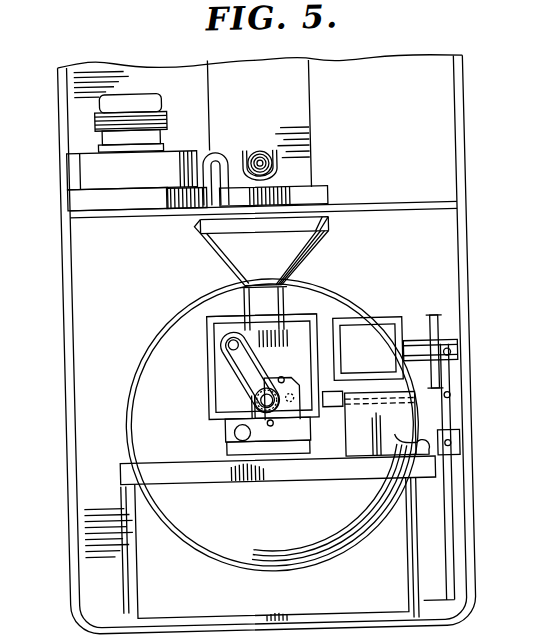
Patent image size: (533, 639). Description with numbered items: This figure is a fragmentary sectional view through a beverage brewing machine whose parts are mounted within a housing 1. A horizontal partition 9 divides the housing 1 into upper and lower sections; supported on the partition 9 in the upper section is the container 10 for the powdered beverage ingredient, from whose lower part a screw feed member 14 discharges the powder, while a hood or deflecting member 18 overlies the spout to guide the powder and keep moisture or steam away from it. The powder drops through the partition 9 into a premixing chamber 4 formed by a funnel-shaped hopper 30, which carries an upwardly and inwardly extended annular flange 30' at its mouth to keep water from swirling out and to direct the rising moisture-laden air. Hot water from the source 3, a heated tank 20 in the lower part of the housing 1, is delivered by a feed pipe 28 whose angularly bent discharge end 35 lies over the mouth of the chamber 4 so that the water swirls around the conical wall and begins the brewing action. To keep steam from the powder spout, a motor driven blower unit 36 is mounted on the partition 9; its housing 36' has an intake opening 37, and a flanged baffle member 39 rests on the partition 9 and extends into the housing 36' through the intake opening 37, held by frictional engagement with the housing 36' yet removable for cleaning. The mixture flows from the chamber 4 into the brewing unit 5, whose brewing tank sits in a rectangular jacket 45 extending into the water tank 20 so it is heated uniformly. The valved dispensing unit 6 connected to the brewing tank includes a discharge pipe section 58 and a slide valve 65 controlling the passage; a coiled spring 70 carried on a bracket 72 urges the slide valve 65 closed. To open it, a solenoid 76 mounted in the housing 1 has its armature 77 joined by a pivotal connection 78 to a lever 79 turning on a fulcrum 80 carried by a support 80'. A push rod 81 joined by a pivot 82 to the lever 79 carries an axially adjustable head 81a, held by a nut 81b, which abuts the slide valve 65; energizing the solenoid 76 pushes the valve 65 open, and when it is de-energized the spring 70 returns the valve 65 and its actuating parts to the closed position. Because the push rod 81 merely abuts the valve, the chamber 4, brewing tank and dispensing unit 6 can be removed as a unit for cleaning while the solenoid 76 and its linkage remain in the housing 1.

The housing 1 is at (473, 133).
The source of heated water 3 is at (122, 365).
The premixing chamber 4 is at (222, 271).
The brewing unit 5 is at (308, 318).
The valved dispensing unit 6 is at (224, 392).
The horizontal partition 9 is at (409, 206).
The container 10 is at (322, 99).
The screw feed member 14 is at (270, 160).
The hood or deflecting member 18 is at (256, 150).
The heated tank 20 is at (130, 435).
The feed pipe 28 is at (211, 149).
The funnel-shaped hopper 30 is at (287, 250).
The annular flange 30' is at (326, 248).
The discharge end 35 is at (213, 246).
The motor driven blower unit 36 is at (130, 92).
The blower housing 36' is at (133, 200).
The intake opening 37 is at (196, 205).
The flanged baffle member 39 is at (290, 188).
The rectangular jacket 45 is at (206, 332).
The pipe section 58 is at (254, 401).
The slide valve 65 is at (302, 388).
The coiled spring 70 is at (231, 431).
The bracket 72 is at (225, 451).
The solenoid 76 is at (380, 320).
The armature 77 is at (440, 342).
The pivotal connection 78 is at (450, 356).
The lever 79 is at (450, 379).
The fulcrum 80 is at (468, 441).
The support 80' is at (407, 434).
The push rod 81 is at (452, 404).
The axially adjustable head 81a is at (330, 390).
The nut 81b is at (343, 412).
The pivot 82 is at (449, 399).